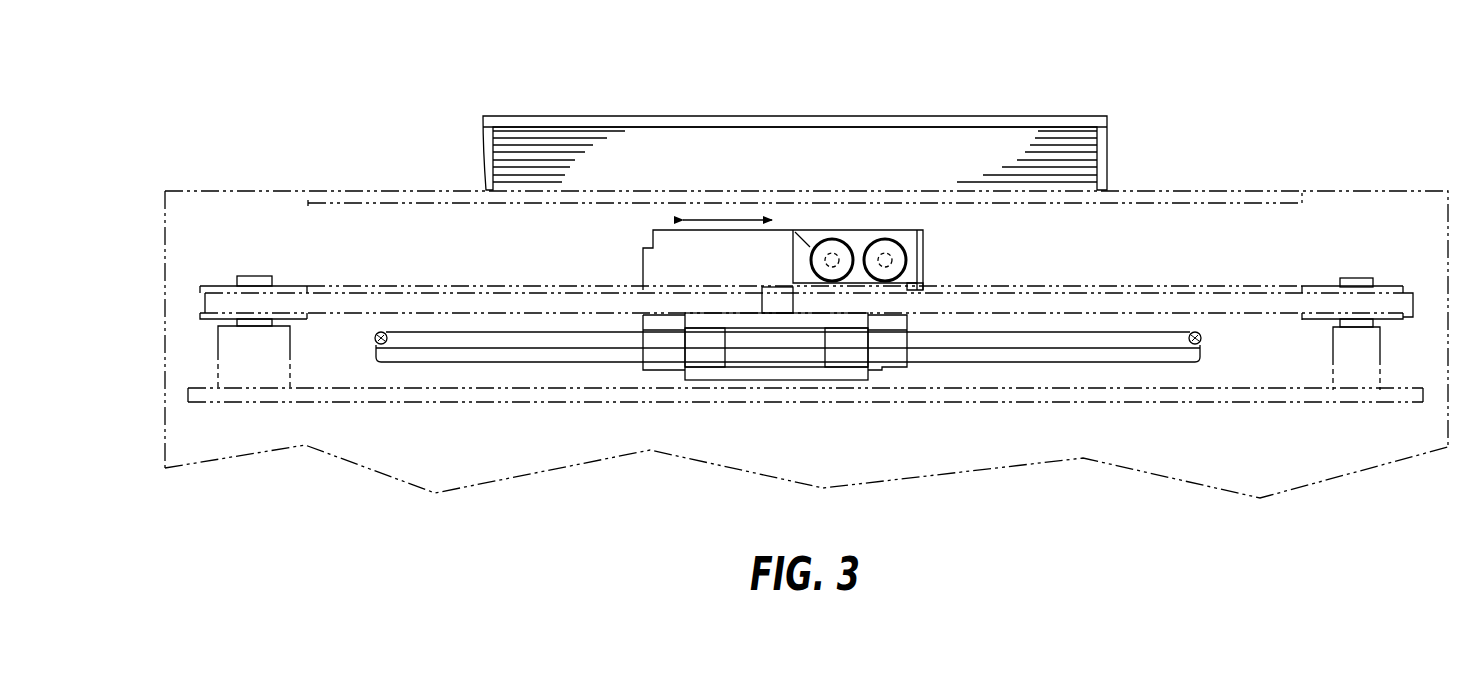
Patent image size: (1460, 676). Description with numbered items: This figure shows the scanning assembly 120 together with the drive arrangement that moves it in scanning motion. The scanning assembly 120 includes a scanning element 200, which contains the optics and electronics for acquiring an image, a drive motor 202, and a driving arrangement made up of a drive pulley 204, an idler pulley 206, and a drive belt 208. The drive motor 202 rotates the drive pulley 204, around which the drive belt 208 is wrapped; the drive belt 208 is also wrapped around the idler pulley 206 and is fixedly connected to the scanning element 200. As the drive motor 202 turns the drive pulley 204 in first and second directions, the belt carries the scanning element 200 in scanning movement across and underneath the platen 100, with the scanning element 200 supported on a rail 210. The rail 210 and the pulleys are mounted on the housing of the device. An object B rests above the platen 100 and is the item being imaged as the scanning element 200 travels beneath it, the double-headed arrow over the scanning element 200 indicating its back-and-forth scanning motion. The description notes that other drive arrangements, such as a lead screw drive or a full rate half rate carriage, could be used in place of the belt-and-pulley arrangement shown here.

The platen 100 is at (1212, 193).
The scanning assembly 120 is at (428, 227).
The media block / cartridge B is at (798, 113).
The scanning element 200 is at (930, 244).
The drive motor 202 is at (218, 353).
The drive pulley 204 is at (222, 283).
The idler pulley 206 is at (1383, 281).
The drive belt 208 is at (1137, 288).
The rail 210 is at (1005, 365).